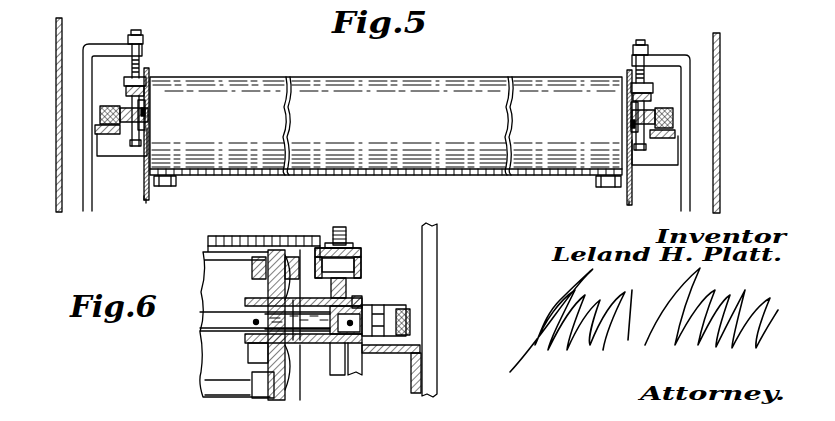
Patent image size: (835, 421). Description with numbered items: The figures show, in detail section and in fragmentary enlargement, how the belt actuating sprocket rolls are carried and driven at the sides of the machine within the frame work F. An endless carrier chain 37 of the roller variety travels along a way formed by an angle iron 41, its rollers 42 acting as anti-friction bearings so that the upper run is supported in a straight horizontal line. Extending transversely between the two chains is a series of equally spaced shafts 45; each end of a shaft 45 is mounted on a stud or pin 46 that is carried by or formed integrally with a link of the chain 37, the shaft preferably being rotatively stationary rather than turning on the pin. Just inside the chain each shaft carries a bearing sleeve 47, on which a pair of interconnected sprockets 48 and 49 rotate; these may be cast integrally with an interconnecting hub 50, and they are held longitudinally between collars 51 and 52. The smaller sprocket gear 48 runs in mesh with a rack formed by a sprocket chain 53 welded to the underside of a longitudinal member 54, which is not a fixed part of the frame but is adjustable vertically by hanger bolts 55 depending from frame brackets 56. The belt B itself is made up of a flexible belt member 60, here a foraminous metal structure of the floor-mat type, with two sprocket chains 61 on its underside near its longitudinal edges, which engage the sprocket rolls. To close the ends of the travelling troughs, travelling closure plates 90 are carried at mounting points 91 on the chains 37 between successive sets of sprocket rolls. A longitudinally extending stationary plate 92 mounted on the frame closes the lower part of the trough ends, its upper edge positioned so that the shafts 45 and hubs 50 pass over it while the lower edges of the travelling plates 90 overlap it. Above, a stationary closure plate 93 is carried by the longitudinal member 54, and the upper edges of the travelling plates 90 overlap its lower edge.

In FIG. 5, the belt B is at (455, 77).
In FIG. 6, the belt B is at (245, 236).
In FIG. 5, the frame work F is at (684, 140).
In FIG. 5, the endless chain 37 is at (100, 116).
In FIG. 6, the endless chain 37 is at (412, 320).
In FIG. 5, the angle iron 41 is at (97, 131).
In FIG. 6, the angle iron 41 is at (410, 356).
In FIG. 5, the roller 42 is at (108, 105).
In FIG. 6, the roller 42 is at (395, 304).
In FIG. 6, the shaft 45 is at (210, 330).
In FIG. 6, the stud or pin 46 is at (350, 326).
In FIG. 6, the bearing sleeve 47 is at (265, 360).
In FIG. 5, the sprocket gear 48 is at (112, 143).
In FIG. 6, the sprocket gear 48 is at (350, 376).
In FIG. 6, the sprocket 49 is at (262, 385).
In FIG. 6, the hub 50 is at (318, 356).
In FIG. 6, the collar 51 is at (256, 306).
In FIG. 6, the collar 52 is at (358, 303).
In FIG. 5, the sprocket chain 53 is at (126, 93).
In FIG. 6, the sprocket chain 53 is at (352, 298).
In FIG. 5, the longitudinal member 54 is at (124, 81).
In FIG. 6, the longitudinal member 54 is at (352, 250).
In FIG. 5, the hanger bolt 55 is at (140, 34).
In FIG. 6, the hanger bolt 55 is at (338, 228).
In FIG. 5, the frame bracket 56 is at (105, 48).
In FIG. 6, the frame bracket 56 is at (438, 236).
In FIG. 5, the belt member 60 is at (452, 177).
In FIG. 6, the belt member 60 is at (274, 250).
In FIG. 5, the sprocket chain 61 is at (177, 183).
In FIG. 6, the sprocket chain 61 is at (252, 269).
In FIG. 5, the closure plate 90 is at (148, 124).
In FIG. 5, the mounting point 91 is at (148, 110).
In FIG. 5, the stationary plate 92 is at (140, 192).
In FIG. 5, the stationary closure plate 93 is at (149, 72).